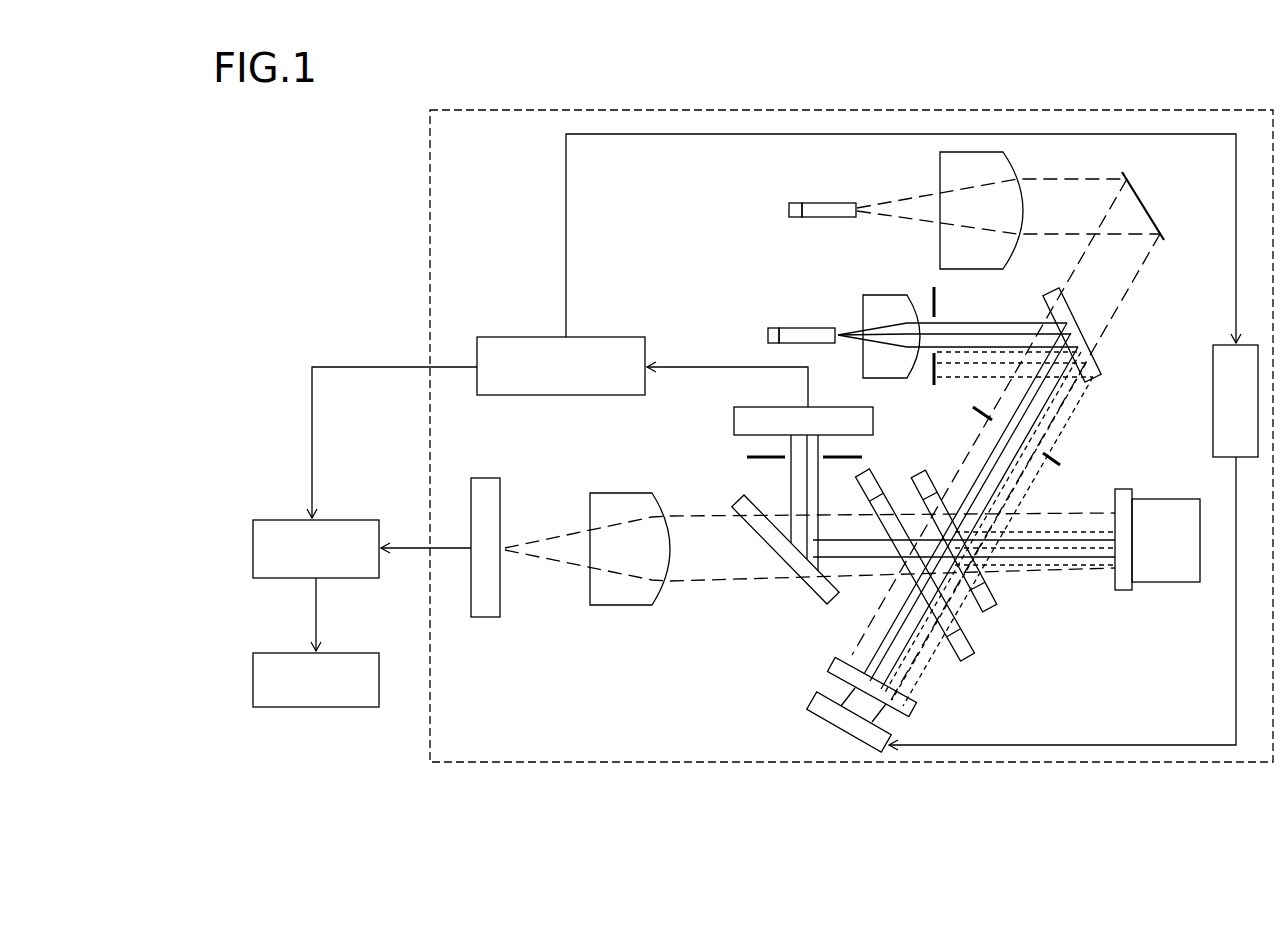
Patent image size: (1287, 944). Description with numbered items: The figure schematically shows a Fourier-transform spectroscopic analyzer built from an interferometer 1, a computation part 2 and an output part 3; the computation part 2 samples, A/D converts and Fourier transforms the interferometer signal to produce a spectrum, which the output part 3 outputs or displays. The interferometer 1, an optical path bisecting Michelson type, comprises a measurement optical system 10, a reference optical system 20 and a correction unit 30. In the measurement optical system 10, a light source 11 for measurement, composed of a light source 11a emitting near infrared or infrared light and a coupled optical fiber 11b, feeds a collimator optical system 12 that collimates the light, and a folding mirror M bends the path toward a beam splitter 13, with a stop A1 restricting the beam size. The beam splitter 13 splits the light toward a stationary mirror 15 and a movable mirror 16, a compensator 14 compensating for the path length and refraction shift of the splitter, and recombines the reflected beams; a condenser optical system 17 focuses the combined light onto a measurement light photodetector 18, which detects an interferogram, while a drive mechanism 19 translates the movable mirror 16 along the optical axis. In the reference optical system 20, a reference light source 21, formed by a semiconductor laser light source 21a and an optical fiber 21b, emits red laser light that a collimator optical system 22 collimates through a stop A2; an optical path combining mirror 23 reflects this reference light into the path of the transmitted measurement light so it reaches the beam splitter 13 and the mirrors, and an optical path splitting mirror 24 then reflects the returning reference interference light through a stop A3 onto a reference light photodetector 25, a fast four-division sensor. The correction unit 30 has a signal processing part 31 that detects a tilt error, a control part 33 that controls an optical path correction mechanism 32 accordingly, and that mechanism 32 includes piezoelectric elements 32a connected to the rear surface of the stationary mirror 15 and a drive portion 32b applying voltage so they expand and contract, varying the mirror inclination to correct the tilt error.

The interferometer 1 is at (429, 207).
The computation part 2 is at (340, 520).
The output part 3 is at (340, 653).
The measurement optical system 10 is at (742, 206).
The light source for measurement 11 is at (815, 175).
The light source 11a is at (794, 204).
The optical fiber 11b is at (836, 195).
The collimator optical system for measurement light 12 is at (1021, 168).
The folding mirror M is at (1143, 205).
The reference optical system 20 is at (712, 311).
The reference light source 21 is at (791, 302).
The light source 21a is at (773, 328).
The optical fiber 21b is at (808, 331).
The collimator optical system for reference light 22 is at (888, 295).
The stop A2 is at (942, 300).
The optical path combining mirror 23 is at (1098, 376).
The stop A1 is at (1064, 461).
The reference light photodetector 25 is at (734, 410).
The stop A3 is at (753, 458).
The optical path splitting mirror 24 is at (812, 600).
The beam splitter 13 is at (990, 612).
The compensator 14 is at (963, 657).
The stationary mirror 15 is at (917, 712).
The movable mirror 16 is at (1122, 590).
The condenser optical system 17 is at (620, 605).
The measurement light photodetector 18 is at (487, 617).
The drive mechanism 19 is at (1166, 582).
The correction unit 30 is at (713, 708).
The signal processing part 31 is at (578, 395).
The optical path correction mechanism 32 is at (802, 697).
The piezoelectric elements 32a is at (848, 688).
The drive portion 32b is at (822, 708).
The control part 33 is at (1213, 408).